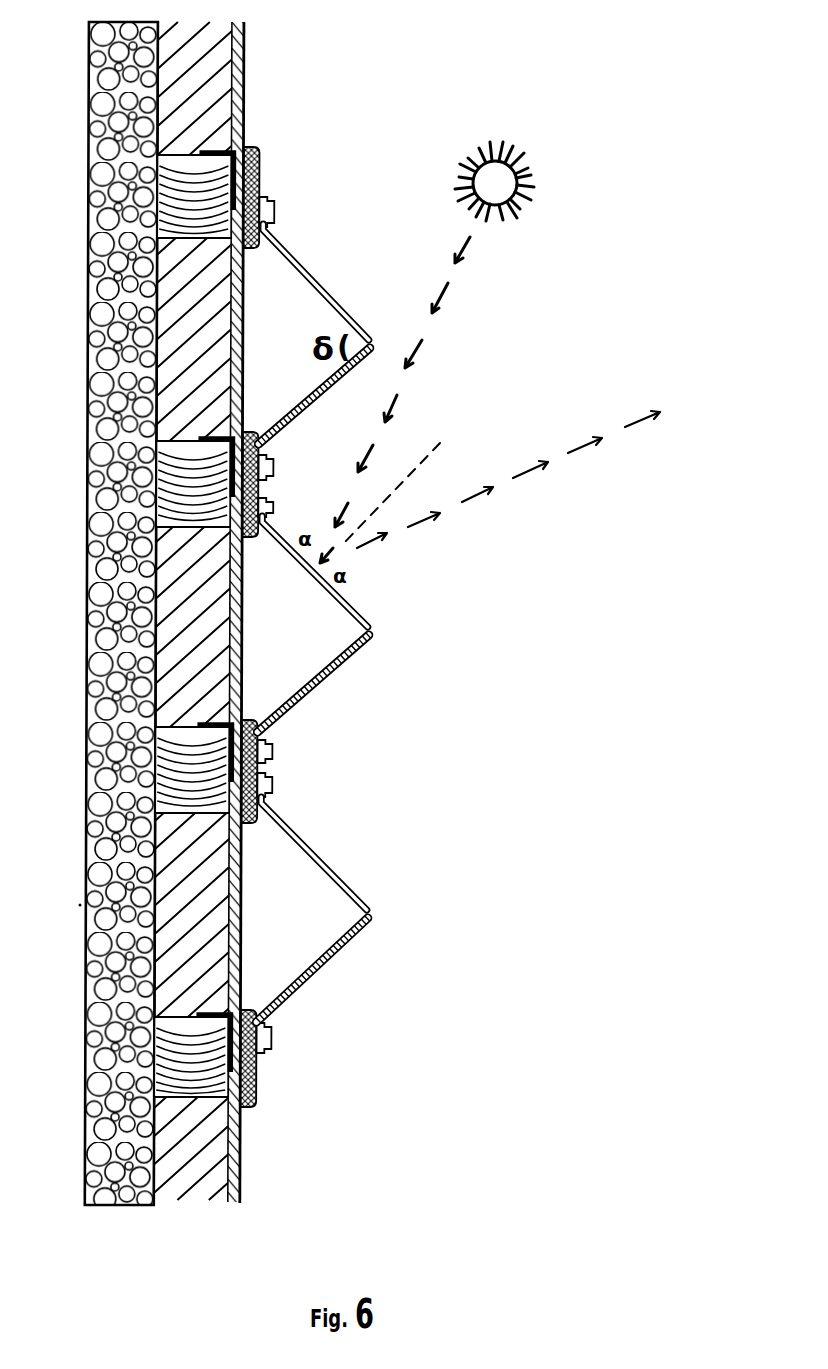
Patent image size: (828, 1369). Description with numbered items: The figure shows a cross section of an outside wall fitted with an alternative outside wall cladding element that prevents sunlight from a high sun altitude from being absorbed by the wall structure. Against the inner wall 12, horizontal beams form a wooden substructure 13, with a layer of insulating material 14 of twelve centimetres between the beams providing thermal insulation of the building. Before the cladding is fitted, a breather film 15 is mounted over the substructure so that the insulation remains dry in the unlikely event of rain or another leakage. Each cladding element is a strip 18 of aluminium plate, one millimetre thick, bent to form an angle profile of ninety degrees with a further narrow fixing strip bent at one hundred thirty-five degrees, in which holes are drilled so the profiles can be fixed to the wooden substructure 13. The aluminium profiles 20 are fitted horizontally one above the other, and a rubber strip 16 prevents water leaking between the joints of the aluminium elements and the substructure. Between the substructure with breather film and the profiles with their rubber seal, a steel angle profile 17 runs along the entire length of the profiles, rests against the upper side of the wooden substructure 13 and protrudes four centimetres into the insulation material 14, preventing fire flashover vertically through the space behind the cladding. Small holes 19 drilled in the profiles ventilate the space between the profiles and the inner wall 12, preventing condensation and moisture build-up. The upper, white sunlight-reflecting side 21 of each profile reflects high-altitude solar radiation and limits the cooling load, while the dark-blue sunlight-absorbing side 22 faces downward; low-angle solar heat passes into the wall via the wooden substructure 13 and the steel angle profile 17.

The inner wall 12 is at (135, 1212).
The wooden substructure 13 is at (205, 1084).
The insulating material 14 is at (195, 1194).
The breather film 15 is at (243, 922).
The rubber strip 16 is at (273, 1076).
The steel angle profile 17 is at (208, 714).
The strip of aluminium plate 18 is at (347, 873).
The small holes 19 is at (288, 745).
The aluminium profiles 20 is at (289, 1020).
The sunlight-reflecting side 21 is at (333, 263).
The sunlight-absorbing side 22 is at (364, 941).